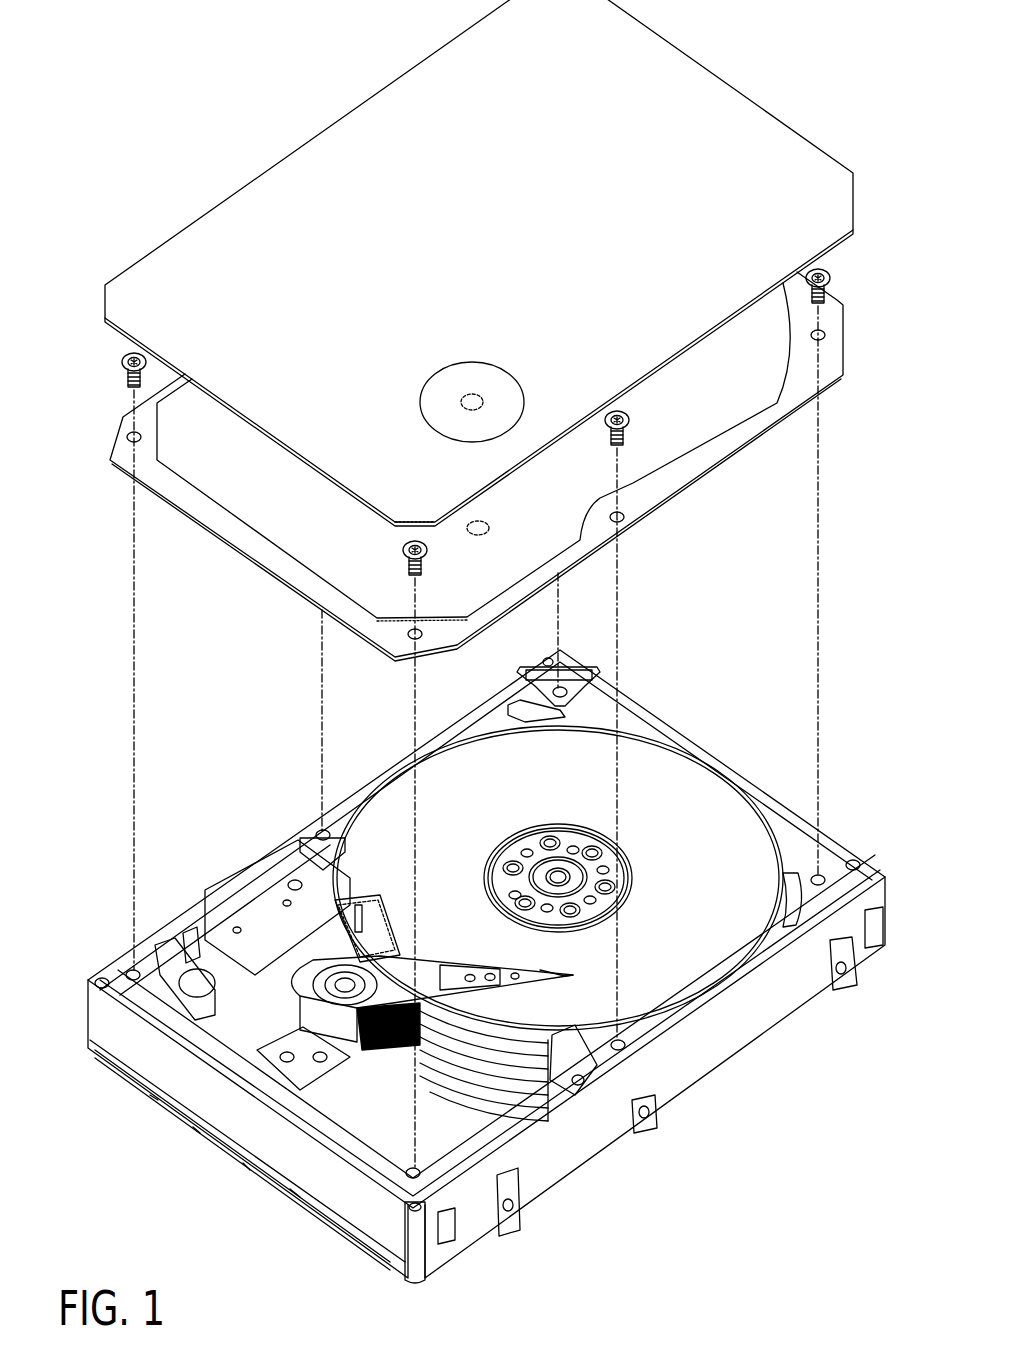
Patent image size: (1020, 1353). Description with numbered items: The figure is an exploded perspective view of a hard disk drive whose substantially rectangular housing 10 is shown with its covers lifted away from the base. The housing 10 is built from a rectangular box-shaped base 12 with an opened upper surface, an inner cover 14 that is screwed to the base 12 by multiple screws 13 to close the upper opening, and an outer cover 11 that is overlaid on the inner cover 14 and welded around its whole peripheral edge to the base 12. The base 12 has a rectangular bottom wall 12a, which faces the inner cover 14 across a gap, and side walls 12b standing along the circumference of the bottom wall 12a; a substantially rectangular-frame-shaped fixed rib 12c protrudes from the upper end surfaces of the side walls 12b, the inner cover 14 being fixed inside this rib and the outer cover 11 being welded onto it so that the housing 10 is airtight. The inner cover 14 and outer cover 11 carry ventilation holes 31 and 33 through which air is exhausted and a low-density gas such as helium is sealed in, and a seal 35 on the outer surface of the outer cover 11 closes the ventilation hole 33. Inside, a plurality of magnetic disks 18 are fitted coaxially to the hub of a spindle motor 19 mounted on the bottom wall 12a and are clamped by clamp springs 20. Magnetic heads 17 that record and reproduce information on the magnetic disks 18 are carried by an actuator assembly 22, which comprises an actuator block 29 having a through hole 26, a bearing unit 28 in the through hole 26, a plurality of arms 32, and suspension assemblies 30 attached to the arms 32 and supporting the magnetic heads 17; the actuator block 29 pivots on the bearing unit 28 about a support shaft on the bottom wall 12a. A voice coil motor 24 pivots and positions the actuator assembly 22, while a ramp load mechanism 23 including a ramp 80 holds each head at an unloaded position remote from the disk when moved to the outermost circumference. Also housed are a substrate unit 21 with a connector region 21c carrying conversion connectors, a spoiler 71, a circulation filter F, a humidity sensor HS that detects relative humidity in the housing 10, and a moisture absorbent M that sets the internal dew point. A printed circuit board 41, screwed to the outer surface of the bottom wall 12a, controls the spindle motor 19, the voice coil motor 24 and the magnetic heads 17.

The housing 10 is at (230, 700).
The outer cover 11 is at (479, 270).
The base 12 is at (486, 969).
The bottom wall 12a is at (575, 1093).
The side walls 12b is at (767, 998).
The fixed rib 12c is at (675, 722).
The screws 13 is at (122, 353).
The inner cover 14 is at (693, 473).
The magnetic heads 17 is at (565, 987).
The magnetic disks 18 is at (558, 911).
The spindle motor 19 is at (573, 835).
The clamp springs 20 is at (520, 830).
The substrate unit 21 is at (354, 1042).
The bearing holder 21c is at (303, 1027).
The actuator assembly 22 is at (436, 945).
The ramp load mechanism 23 is at (580, 1016).
The voice coil motor 24 is at (224, 952).
The through hole 26 is at (340, 960).
The bearing unit 28 is at (313, 965).
The actuator block 29 is at (363, 930).
The suspension assemblies 30 is at (545, 960).
The ventilation hole 31 is at (490, 527).
The arms 32 is at (455, 967).
The ventilation hole 33 is at (483, 398).
The seal 35 is at (482, 372).
The printed circuit board 41 is at (357, 1252).
The spoiler 71 is at (358, 908).
The ramp 80 is at (572, 1097).
The circulation filter F is at (513, 707).
The humidity sensor HS is at (180, 935).
The moisture absorbent M is at (788, 883).